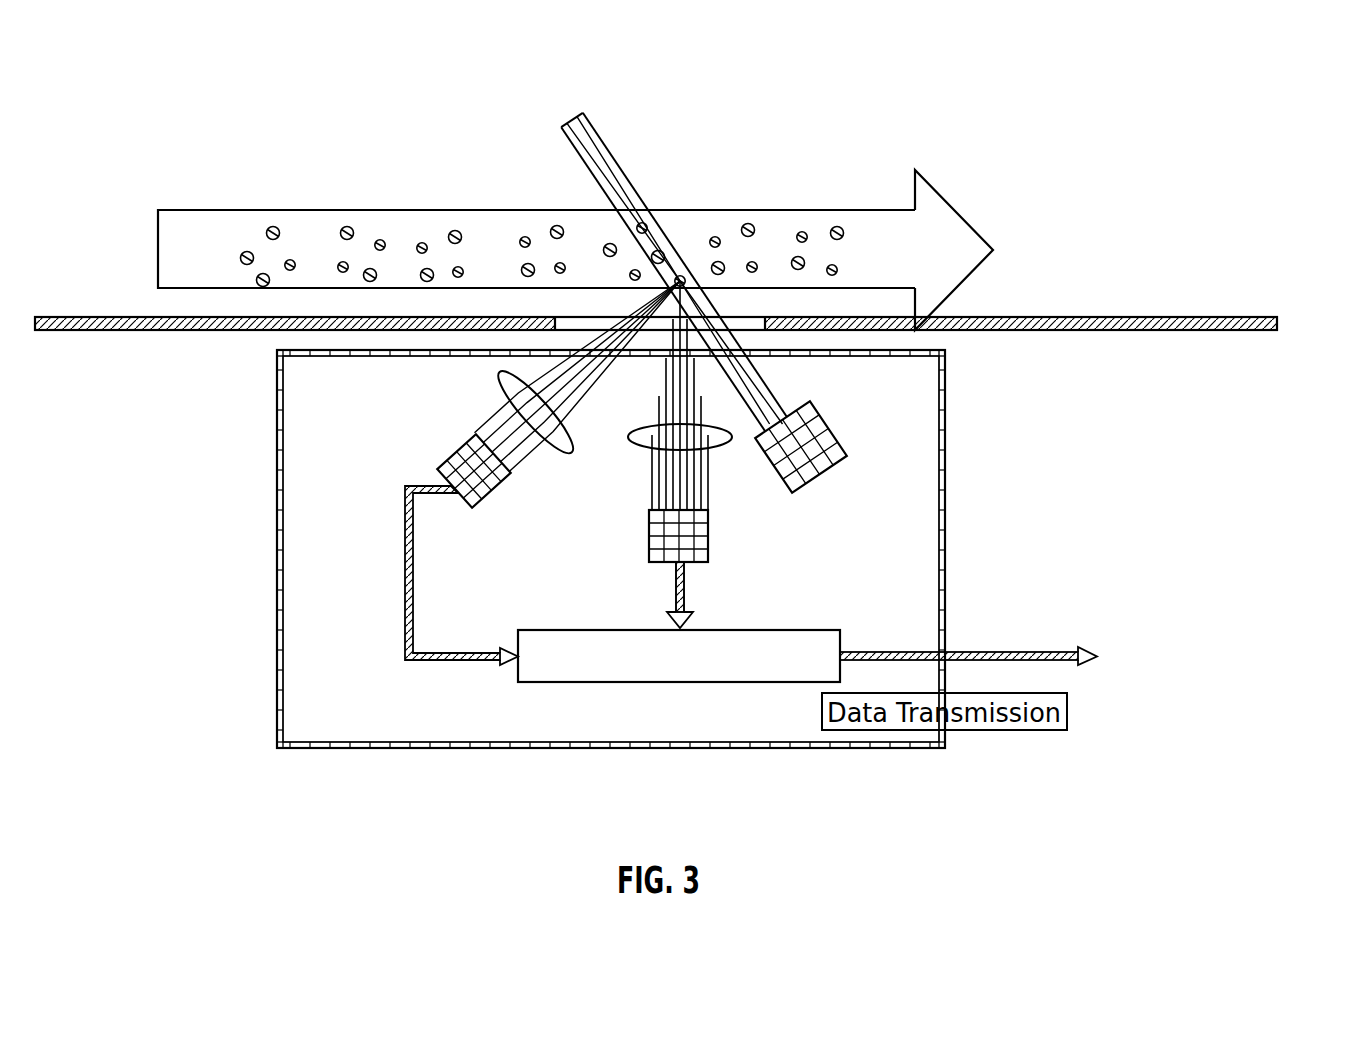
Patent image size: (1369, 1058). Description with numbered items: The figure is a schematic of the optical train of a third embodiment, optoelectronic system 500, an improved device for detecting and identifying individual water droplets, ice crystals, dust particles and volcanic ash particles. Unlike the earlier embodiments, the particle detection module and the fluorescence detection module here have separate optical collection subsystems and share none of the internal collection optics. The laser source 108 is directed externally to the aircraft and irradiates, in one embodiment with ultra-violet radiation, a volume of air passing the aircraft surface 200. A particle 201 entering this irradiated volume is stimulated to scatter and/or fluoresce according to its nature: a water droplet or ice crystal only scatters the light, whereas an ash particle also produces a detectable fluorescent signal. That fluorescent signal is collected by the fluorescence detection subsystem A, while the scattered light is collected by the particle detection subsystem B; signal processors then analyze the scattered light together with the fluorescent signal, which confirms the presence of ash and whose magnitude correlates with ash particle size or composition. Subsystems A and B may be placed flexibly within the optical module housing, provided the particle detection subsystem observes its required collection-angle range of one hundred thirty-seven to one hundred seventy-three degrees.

The optoelectronic system 500 is at (1241, 92).
The particle 201 is at (681, 276).
The aircraft surface 200 is at (1277, 324).
The laser source 108 is at (828, 430).
The fluorescence detection module (FDM) optical subsystem A is at (460, 447).
The particle detection module (PDM) optical subsystem B is at (649, 534).